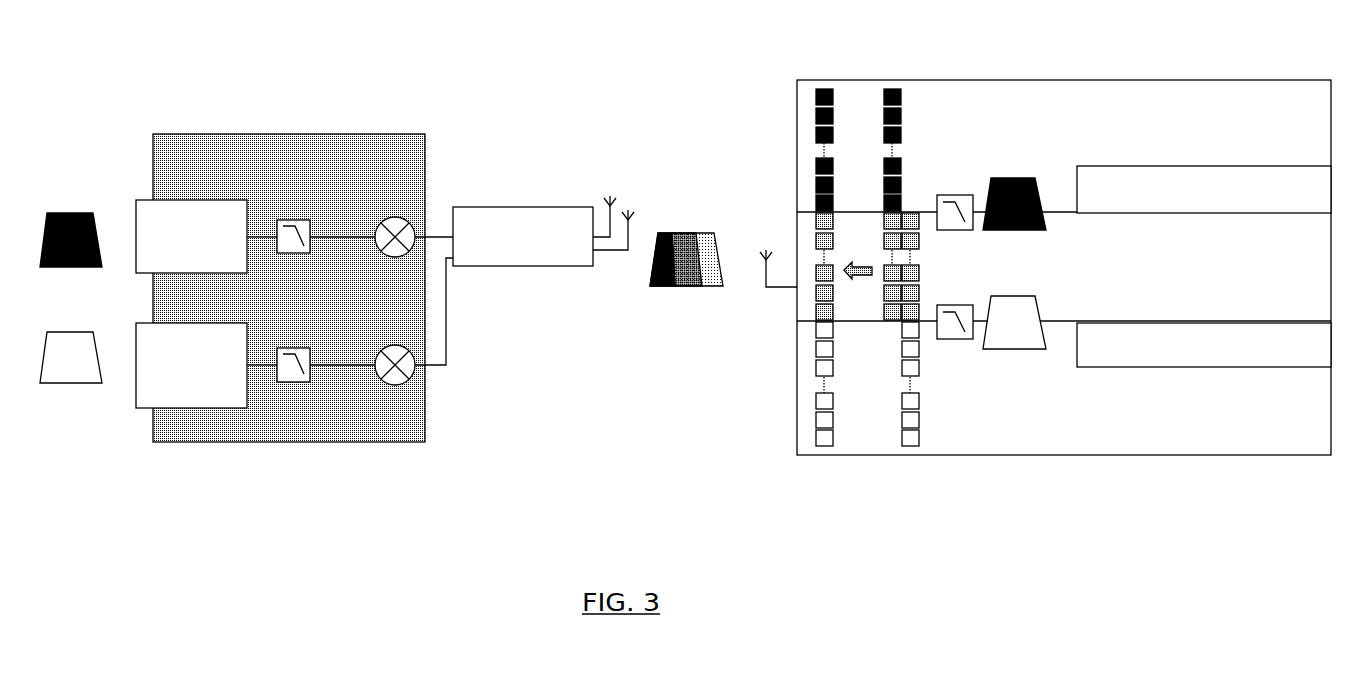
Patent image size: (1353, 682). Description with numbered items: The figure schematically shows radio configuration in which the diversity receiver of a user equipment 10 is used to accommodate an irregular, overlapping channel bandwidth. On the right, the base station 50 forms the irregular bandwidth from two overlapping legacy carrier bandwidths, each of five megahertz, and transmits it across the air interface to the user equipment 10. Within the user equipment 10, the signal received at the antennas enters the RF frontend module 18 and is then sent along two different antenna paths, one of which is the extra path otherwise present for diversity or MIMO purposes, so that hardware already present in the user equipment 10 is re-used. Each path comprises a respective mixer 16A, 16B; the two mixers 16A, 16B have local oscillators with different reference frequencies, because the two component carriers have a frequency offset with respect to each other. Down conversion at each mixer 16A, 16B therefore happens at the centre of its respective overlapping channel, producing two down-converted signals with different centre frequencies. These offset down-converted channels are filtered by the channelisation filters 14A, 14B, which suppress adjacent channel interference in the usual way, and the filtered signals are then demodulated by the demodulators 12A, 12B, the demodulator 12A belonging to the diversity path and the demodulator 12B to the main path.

The user equipment 10 is at (329, 115).
The demodulator 12A is at (138, 423).
The demodulator 12B is at (206, 296).
The channelisation filter 14A is at (298, 396).
The channelisation filter 14B is at (313, 286).
The mixer 16A is at (427, 388).
The mixer 16B is at (422, 267).
The RF frontend module 18 is at (525, 194).
The base station 50 is at (936, 67).